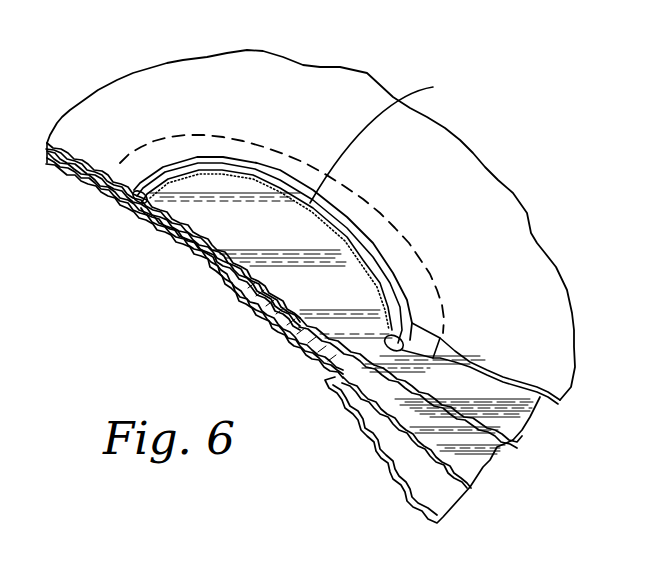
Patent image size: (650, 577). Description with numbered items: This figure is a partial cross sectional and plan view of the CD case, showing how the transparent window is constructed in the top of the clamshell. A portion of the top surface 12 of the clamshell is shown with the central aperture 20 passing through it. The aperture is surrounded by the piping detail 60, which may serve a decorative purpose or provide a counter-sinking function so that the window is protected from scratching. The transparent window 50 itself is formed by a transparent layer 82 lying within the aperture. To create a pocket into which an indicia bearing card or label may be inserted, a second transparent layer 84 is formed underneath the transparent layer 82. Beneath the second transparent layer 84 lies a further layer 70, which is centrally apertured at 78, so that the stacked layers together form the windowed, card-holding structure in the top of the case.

The top surface 12 is at (433, 152).
The central aperture 20 is at (258, 163).
The piping detail 60 is at (293, 203).
The transparent window 50 is at (274, 242).
The central aperture of layer 70 78 is at (345, 375).
The transparent layer 82 is at (530, 417).
The second transparent layer 84 is at (490, 467).
The layer 70 is at (413, 510).